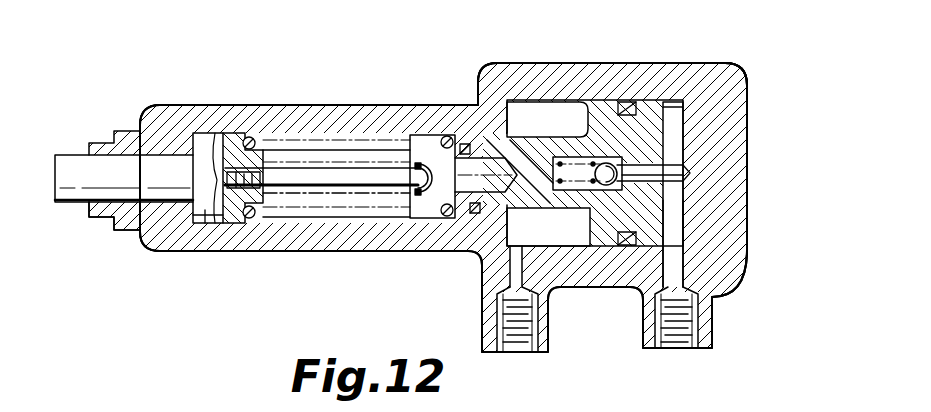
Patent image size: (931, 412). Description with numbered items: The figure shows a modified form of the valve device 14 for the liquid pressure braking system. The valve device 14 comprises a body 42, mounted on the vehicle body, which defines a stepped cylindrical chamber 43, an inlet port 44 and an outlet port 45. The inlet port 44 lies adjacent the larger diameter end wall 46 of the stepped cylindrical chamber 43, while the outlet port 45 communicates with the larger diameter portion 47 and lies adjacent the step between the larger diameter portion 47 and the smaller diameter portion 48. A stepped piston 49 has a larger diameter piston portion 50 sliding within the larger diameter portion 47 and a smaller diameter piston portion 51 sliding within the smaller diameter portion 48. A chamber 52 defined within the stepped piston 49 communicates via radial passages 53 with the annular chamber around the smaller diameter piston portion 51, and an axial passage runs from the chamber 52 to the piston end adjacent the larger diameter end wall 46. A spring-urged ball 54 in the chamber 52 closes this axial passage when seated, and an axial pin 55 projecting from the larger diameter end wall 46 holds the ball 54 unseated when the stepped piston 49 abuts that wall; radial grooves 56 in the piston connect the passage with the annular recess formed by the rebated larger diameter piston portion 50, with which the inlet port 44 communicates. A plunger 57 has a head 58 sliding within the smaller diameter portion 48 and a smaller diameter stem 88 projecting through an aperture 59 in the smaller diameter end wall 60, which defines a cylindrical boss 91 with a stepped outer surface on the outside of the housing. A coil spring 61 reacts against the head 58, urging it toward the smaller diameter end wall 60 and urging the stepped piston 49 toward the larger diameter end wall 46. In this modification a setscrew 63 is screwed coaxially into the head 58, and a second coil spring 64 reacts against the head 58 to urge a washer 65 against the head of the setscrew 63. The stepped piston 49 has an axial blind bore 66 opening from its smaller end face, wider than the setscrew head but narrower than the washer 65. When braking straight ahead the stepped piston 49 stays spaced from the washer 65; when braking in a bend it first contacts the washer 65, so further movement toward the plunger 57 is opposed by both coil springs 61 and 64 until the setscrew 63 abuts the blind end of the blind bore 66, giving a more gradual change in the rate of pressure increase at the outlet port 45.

The valve device 14 is at (305, 248).
The body 42 is at (420, 245).
The stepped cylindrical chamber 43 is at (365, 128).
The inlet port 44 is at (698, 322).
The outlet port 45 is at (500, 322).
The larger diameter end wall 46 is at (706, 117).
The larger diameter portion 47 is at (602, 120).
The smaller diameter portion 48 is at (258, 143).
The stepped piston 49 is at (527, 152).
The larger diameter piston portion 50 is at (655, 110).
The smaller diameter piston portion 51 is at (497, 140).
The chamber 52 is at (597, 185).
The radial passages 53 is at (563, 150).
The ball 54 is at (606, 246).
The axial pin 55 is at (693, 175).
The radial grooves 56 is at (672, 222).
The plunger 57 is at (150, 196).
The head 58 is at (207, 222).
The aperture 59 is at (136, 148).
The smaller diameter end wall 60 is at (180, 150).
The coil spring 61 is at (321, 140).
The setscrew 63 is at (353, 178).
The second coil spring 64 is at (290, 195).
The washer 65 is at (414, 160).
The axial blind bore 66 is at (470, 152).
The smaller diameter stem 88 is at (92, 178).
The cylindrical boss 91 is at (132, 222).